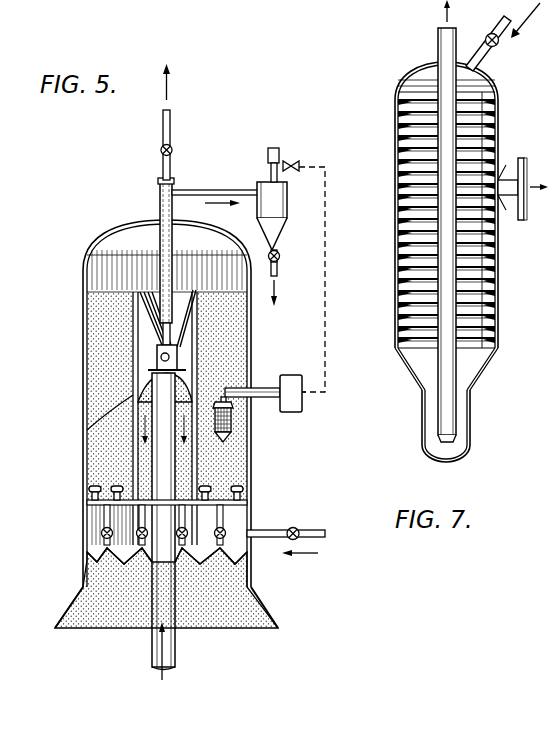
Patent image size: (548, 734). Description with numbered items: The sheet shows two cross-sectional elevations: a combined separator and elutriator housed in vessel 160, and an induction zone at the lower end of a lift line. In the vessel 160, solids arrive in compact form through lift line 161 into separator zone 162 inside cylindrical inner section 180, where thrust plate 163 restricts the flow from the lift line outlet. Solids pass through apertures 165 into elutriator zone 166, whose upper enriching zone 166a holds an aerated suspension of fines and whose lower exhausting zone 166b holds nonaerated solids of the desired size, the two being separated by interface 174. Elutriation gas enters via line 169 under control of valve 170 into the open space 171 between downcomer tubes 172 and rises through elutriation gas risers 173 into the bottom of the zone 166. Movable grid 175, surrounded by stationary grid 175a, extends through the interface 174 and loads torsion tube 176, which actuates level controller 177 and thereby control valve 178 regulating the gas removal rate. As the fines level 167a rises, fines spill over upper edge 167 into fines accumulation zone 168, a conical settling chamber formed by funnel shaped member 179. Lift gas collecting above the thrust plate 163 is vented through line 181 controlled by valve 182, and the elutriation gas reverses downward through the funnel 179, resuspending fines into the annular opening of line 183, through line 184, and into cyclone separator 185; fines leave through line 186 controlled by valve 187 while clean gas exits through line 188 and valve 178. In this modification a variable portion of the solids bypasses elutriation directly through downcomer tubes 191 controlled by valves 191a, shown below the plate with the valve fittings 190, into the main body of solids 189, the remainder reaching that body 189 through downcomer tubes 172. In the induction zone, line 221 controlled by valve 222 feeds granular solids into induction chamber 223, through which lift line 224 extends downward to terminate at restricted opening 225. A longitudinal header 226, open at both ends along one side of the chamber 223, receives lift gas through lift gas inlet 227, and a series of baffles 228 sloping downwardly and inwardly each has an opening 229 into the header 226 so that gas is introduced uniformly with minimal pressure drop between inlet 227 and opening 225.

In FIG. 5, the vessel 160 is at (136, 227).
In FIG. 5, the lift line 161 is at (175, 624).
In FIG. 5, the separator zone 162 is at (150, 391).
In FIG. 5, the thrust plate 163 is at (150, 370).
In FIG. 5, the apertures 165 is at (108, 458).
In FIG. 5, the elutriator zone 166 is at (112, 436).
In FIG. 5, the enriching zone 166a is at (236, 356).
In FIG. 5, the exhausting zone 166b is at (96, 481).
In FIG. 5, the upper edge 167 is at (197, 293).
In FIG. 5, the fines level 167a is at (110, 290).
In FIG. 5, the fines accumulation zone 168 is at (147, 291).
In FIG. 5, the elutriation gas line 169 is at (262, 530).
In FIG. 5, the valve 170 is at (296, 529).
In FIG. 5, the open space 171 is at (83, 576).
In FIG. 5, the downcomer tubes 172 is at (251, 578).
In FIG. 5, the elutriation gas risers 173 is at (240, 494).
In FIG. 5, the interface 174 is at (110, 415).
In FIG. 5, the movable grid 175 is at (234, 432).
In FIG. 5, the stationary grid 175a is at (236, 455).
In FIG. 5, the torsion tube 176 is at (236, 388).
In FIG. 5, the level controller 177 is at (303, 411).
In FIG. 5, the control valve 178 is at (294, 164).
In FIG. 5, the funnel shaped member 179 is at (140, 326).
In FIG. 5, the inner section 180 is at (200, 331).
In FIG. 5, the lift gas removal line 181 is at (162, 338).
In FIG. 5, the valve 182 is at (160, 150).
In FIG. 5, the fines suspension line 183 is at (162, 192).
In FIG. 5, the transfer line 184 is at (246, 186).
In FIG. 5, the cyclone separator 185 is at (290, 204).
In FIG. 5, the fines outlet line 186 is at (279, 246).
In FIG. 5, the valve 187 is at (279, 257).
In FIG. 5, the gas outlet line 188 is at (279, 152).
In FIG. 5, the main body of solids 189 is at (112, 592).
In FIG. 5, the nozzle valves 190 is at (214, 533).
In FIG. 5, the downcomer tubes 191 is at (220, 511).
In FIG. 5, the valves 191a is at (105, 545).
In FIG. 7, the solids inlet line 221 is at (529, 19).
In FIG. 7, the valve 222 is at (500, 50).
In FIG. 7, the induction chamber 223 is at (398, 95).
In FIG. 7, the lift line 224 is at (444, 47).
In FIG. 7, the restricted opening 225 is at (452, 440).
In FIG. 7, the longitudinal header 226 is at (490, 352).
In FIG. 7, the lift gas inlet 227 is at (521, 224).
In FIG. 7, the baffles 228 is at (410, 226).
In FIG. 7, the opening 229 is at (497, 134).